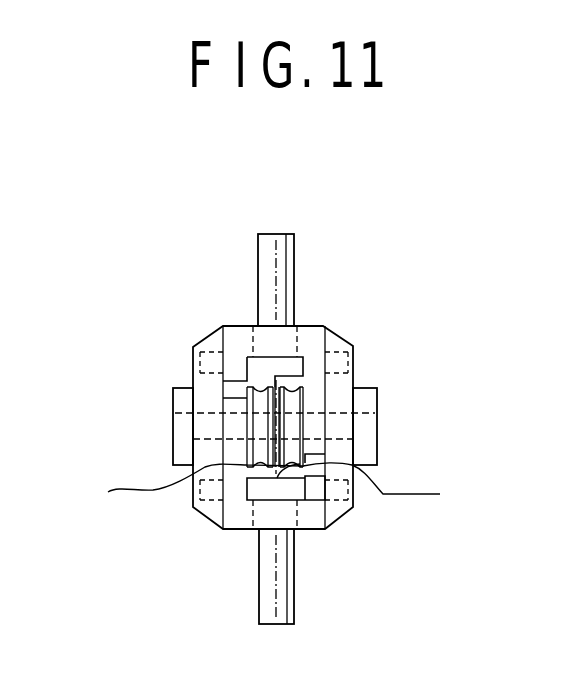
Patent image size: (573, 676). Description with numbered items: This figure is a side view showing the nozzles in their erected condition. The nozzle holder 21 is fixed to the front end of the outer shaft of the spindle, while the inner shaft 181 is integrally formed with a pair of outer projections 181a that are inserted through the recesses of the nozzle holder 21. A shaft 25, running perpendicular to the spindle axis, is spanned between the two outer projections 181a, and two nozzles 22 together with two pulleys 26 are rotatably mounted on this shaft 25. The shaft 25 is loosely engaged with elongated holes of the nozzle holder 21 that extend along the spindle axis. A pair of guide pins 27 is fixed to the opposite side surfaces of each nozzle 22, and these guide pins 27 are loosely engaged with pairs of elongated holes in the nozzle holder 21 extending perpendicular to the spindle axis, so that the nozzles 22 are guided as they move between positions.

The nozzle holder 21 is at (271, 397).
The nozzle 22 is at (265, 258).
The shaft 25 is at (347, 430).
The pulley 26 is at (271, 486).
The guide pin 27 is at (358, 363).
The inner shaft 181 is at (313, 330).
The outer projection 181a is at (177, 415).